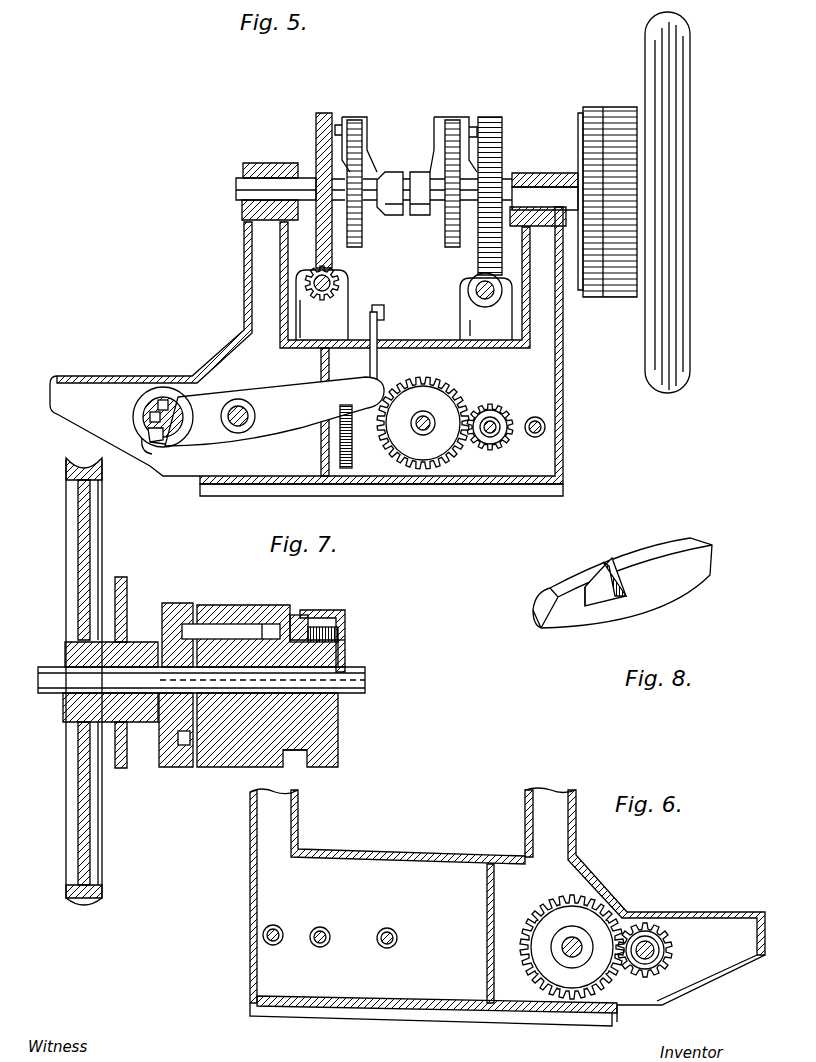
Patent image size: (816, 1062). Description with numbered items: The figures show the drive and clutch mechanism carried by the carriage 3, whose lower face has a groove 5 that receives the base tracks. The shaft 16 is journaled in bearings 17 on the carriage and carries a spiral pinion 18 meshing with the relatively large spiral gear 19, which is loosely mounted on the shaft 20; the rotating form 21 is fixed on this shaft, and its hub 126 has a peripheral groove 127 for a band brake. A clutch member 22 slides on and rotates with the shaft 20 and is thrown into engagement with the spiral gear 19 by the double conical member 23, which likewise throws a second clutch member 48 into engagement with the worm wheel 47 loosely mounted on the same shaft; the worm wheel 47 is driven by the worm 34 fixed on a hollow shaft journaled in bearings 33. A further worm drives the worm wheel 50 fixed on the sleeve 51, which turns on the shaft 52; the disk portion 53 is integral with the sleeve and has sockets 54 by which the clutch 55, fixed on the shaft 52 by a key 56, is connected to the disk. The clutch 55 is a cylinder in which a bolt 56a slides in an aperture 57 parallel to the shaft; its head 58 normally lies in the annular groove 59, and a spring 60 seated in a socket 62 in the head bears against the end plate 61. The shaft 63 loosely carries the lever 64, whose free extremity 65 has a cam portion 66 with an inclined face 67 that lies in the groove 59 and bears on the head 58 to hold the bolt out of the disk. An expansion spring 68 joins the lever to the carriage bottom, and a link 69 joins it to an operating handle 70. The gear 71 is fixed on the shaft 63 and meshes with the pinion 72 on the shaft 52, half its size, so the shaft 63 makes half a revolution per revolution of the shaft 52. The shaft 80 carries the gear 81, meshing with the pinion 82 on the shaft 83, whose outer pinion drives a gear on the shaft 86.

In FIG. 5, the carriage 3 is at (564, 380).
In FIG. 7, the carriage 3 is at (121, 748).
In FIG. 6, the carriage 3 is at (403, 868).
In FIG. 5, the groove 5 is at (459, 497).
In FIG. 5, the shaft 16 is at (338, 280).
In FIG. 5, the bearings 17 is at (336, 312).
In FIG. 5, the spiral pinion 18 is at (318, 303).
In FIG. 5, the spiral gear 19 is at (316, 130).
In FIG. 5, the shaft 20 is at (247, 186).
In FIG. 5, the rotating form 21 is at (672, 120).
In FIG. 5, the clutch member 22 is at (352, 166).
In FIG. 5, the double conical member 23 is at (388, 172).
In FIG. 5, the bearings 33 is at (475, 327).
In FIG. 5, the worm 34 is at (476, 288).
In FIG. 5, the worm wheel 47 is at (502, 140).
In FIG. 5, the clutch member 48 is at (450, 225).
In FIG. 5, the worm wheel 50 is at (66, 474).
In FIG. 7, the sleeve 51 is at (66, 702).
In FIG. 5, the shaft 52 is at (152, 414).
In FIG. 7, the shaft 52 is at (55, 668).
In FIG. 6, the shaft 52 is at (652, 958).
In FIG. 7, the disk portion 53 is at (172, 603).
In FIG. 7, the sockets 54 is at (186, 604).
In FIG. 5, the clutch 55 is at (152, 398).
In FIG. 7, the clutch 55 is at (232, 755).
In FIG. 5, the key 56 is at (147, 418).
In FIG. 7, the key 56 is at (342, 668).
In FIG. 5, the bolt 56a is at (166, 400).
In FIG. 7, the bolt 56a is at (230, 632).
In FIG. 7, the aperture 57 is at (262, 622).
In FIG. 7, the head 58 is at (300, 615).
In FIG. 7, the annular groove 59 is at (300, 755).
In FIG. 7, the spring 60 is at (345, 618).
In FIG. 7, the end plate 61 is at (346, 634).
In FIG. 7, the socket 62 is at (322, 627).
In FIG. 5, the shaft 63 is at (240, 410).
In FIG. 6, the shaft 63 is at (564, 940).
In FIG. 5, the lever 64 is at (215, 432).
In FIG. 8, the lever 64 is at (676, 589).
In FIG. 5, the free extremity 65 is at (148, 432).
In FIG. 8, the free extremity 65 is at (556, 620).
In FIG. 5, the cam portion 66 is at (154, 445).
In FIG. 8, the cam portion 66 is at (569, 586).
In FIG. 5, the inclined face 67 is at (162, 442).
In FIG. 8, the inclined face 67 is at (619, 573).
In FIG. 5, the expansion spring 68 is at (352, 450).
In FIG. 5, the link 69 is at (377, 365).
In FIG. 5, the operating handle 70 is at (384, 313).
In FIG. 6, the gear 71 is at (588, 975).
In FIG. 6, the pinion 72 is at (645, 970).
In FIG. 5, the shaft 80 is at (426, 420).
In FIG. 6, the shaft 80 is at (389, 930).
In FIG. 5, the gear 81 is at (450, 412).
In FIG. 5, the pinion 82 is at (498, 408).
In FIG. 5, the shaft 83 is at (489, 436).
In FIG. 6, the shaft 83 is at (322, 929).
In FIG. 5, the shaft 86 is at (535, 437).
In FIG. 6, the shaft 86 is at (275, 927).
In FIG. 5, the hub 126 is at (612, 298).
In FIG. 5, the peripheral groove 127 is at (582, 130).